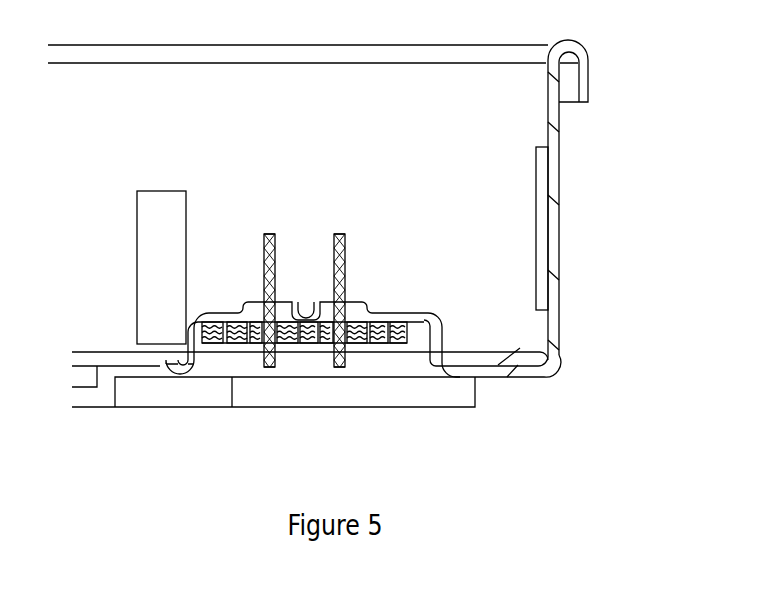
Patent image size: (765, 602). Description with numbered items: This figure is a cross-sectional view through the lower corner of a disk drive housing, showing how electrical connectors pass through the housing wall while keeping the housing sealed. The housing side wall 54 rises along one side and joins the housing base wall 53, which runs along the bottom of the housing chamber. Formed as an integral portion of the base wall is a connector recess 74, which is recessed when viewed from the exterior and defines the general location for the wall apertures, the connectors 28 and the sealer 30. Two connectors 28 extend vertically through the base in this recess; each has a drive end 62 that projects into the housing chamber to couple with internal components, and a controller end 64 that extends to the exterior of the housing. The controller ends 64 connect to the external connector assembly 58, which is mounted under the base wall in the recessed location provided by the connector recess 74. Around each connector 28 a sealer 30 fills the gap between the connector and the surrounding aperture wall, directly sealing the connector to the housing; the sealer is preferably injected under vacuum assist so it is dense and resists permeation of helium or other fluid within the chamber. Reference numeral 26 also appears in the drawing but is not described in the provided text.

The base 26 is at (534, 378).
The connector 28 is at (346, 248).
The sealer 30 is at (347, 302).
The housing base wall 53 is at (493, 366).
The housing side wall 54 is at (512, 129).
The external connector assembly 58 is at (392, 313).
The drive end 62 is at (338, 235).
The controller end 64 is at (270, 367).
The connector recess 74 is at (425, 322).